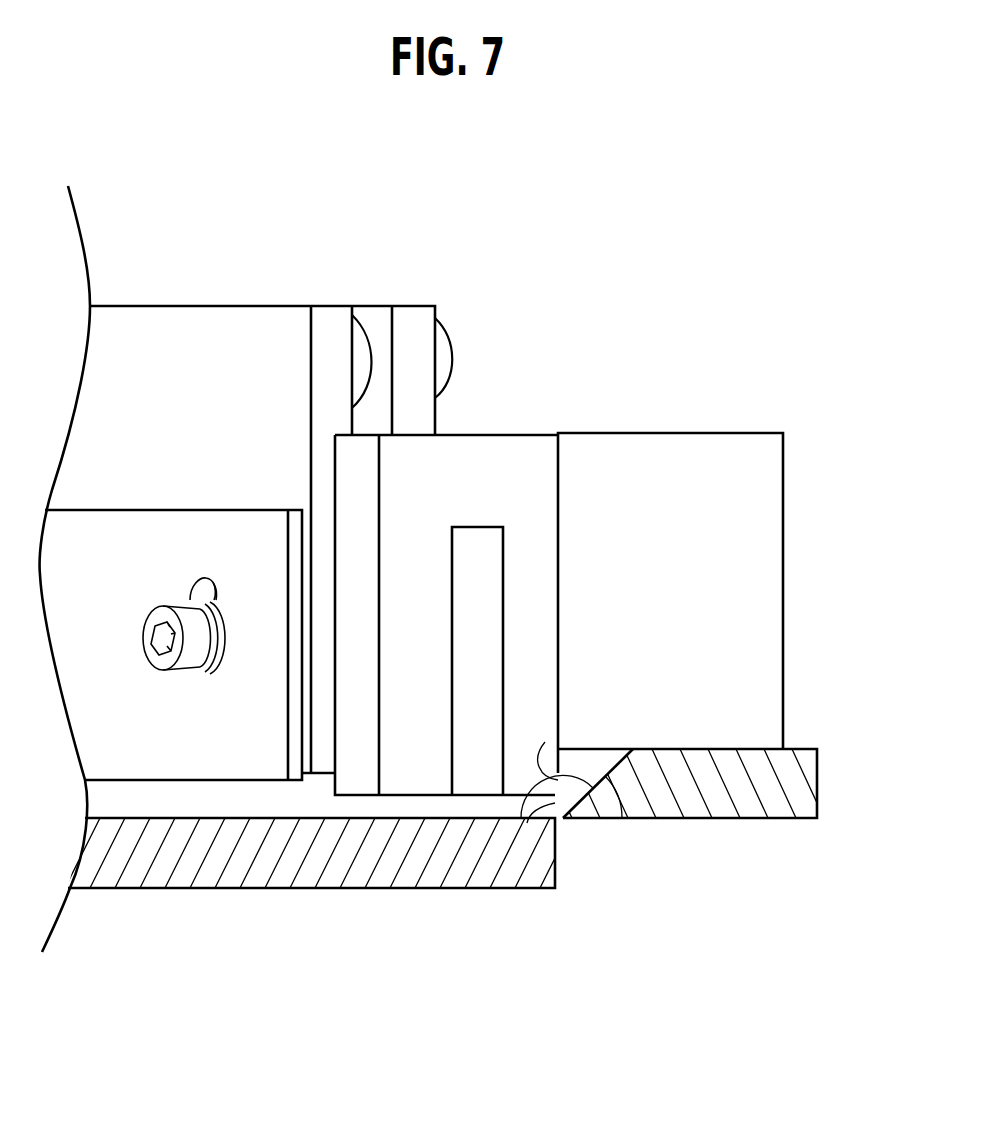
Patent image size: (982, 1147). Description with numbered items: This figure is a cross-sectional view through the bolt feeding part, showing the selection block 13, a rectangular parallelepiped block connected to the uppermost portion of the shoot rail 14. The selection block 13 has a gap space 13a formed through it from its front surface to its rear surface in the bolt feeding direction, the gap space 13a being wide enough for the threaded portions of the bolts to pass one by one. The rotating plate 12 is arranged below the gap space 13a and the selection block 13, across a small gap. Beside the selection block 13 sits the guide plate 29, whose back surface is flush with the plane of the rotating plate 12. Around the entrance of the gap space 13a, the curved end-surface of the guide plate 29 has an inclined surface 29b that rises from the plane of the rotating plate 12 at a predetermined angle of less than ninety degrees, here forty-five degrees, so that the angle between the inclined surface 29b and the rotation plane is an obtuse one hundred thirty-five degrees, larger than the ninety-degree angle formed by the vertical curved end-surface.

The rotating plate 12 is at (230, 878).
The selection block 13 is at (530, 435).
The gap space 13a is at (452, 570).
The shoot rail 14 is at (200, 304).
The guide plate 29 is at (818, 795).
The inclined surface 29b is at (612, 750).